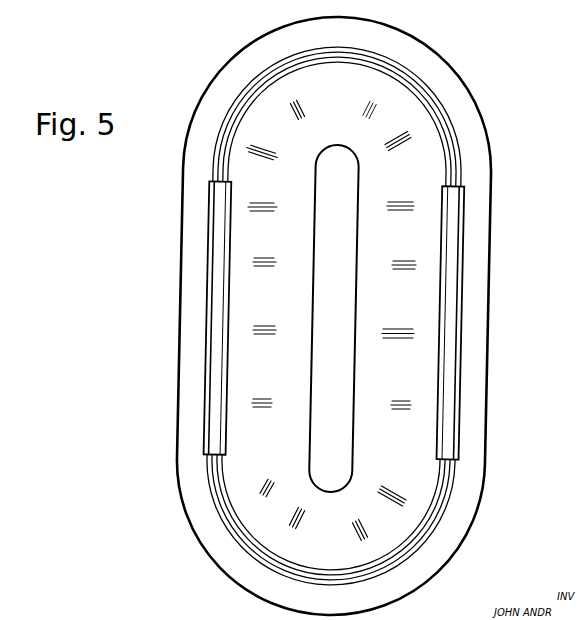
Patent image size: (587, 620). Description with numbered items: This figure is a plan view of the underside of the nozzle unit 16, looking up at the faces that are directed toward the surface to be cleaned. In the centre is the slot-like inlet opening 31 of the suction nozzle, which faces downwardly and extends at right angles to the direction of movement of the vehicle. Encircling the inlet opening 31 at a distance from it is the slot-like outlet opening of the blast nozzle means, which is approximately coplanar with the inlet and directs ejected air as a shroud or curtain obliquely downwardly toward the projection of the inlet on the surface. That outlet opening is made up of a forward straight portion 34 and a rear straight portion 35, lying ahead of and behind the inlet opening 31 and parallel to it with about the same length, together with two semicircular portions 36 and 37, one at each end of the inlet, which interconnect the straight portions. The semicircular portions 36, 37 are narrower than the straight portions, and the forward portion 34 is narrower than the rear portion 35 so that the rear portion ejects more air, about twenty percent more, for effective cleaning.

The nozzle unit 16 is at (463, 81).
The inlet opening 31 is at (349, 280).
The forward straight portion 34 is at (210, 275).
The rear straight portion 35 is at (462, 283).
The semicircular portion 36 is at (448, 131).
The semicircular portion 37 is at (231, 527).